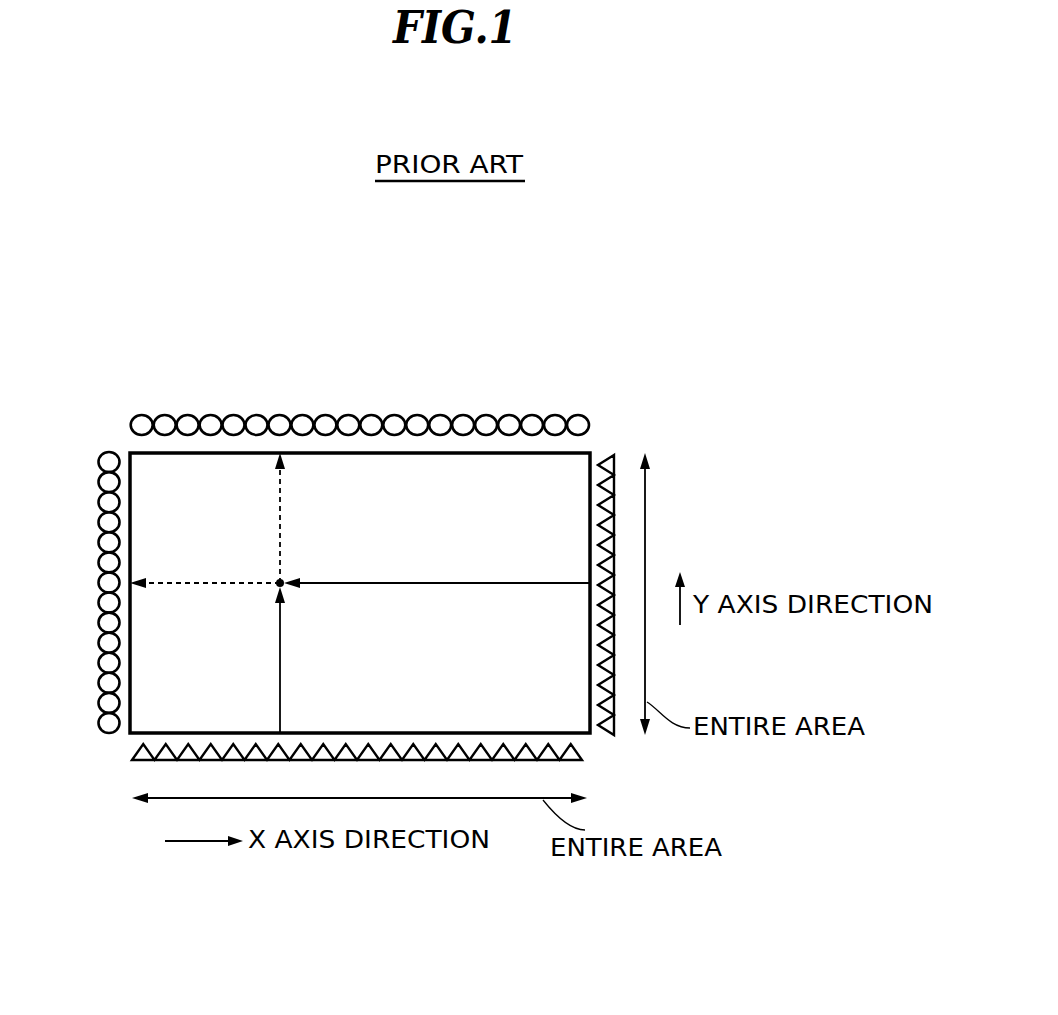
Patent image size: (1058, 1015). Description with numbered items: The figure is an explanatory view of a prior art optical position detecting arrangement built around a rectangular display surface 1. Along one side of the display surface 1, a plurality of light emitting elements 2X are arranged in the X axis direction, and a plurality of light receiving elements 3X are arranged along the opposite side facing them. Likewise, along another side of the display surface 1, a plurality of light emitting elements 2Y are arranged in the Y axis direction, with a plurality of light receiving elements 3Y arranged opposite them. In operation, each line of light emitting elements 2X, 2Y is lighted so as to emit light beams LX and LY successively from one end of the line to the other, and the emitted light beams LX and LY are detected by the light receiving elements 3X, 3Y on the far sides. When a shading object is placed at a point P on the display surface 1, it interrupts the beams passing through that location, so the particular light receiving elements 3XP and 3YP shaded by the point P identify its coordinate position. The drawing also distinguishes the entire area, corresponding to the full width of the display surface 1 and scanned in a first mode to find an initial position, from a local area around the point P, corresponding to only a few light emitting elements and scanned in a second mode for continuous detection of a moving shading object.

The display surface 1 is at (598, 455).
The light emitting elements 2X is at (578, 762).
The light emitting elements 2Y is at (613, 456).
The light receiving elements 3X is at (356, 397).
The light receiving elements 3Y is at (72, 590).
The light receiving element 3XP is at (281, 414).
The light receiving element 3YP is at (84, 580).
The point P is at (284, 580).
The light beam LX is at (282, 664).
The light beam LY is at (460, 586).